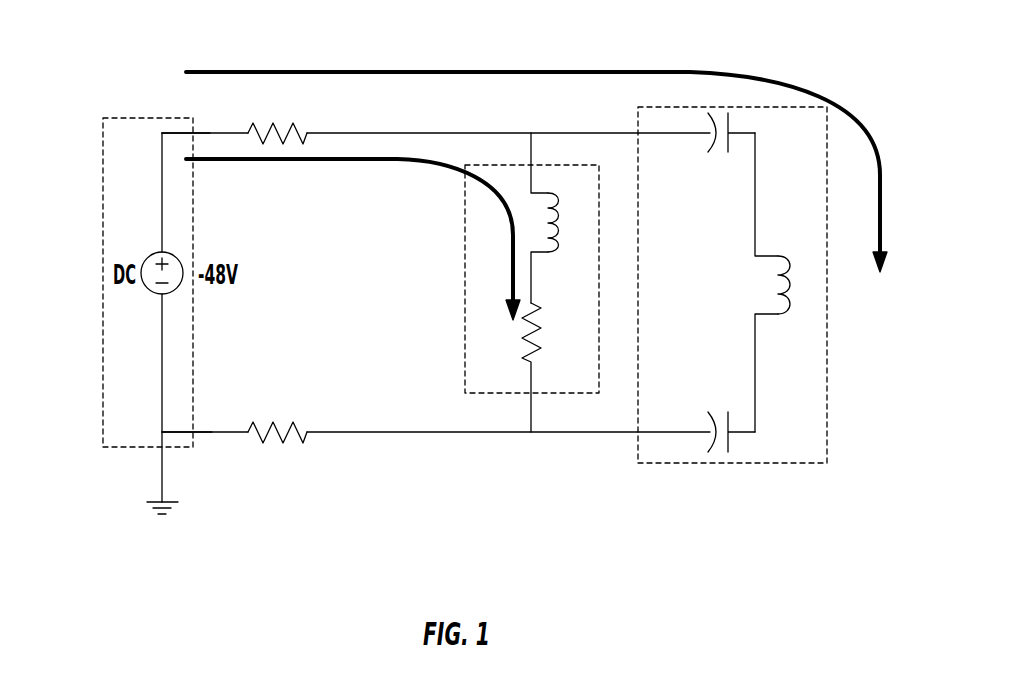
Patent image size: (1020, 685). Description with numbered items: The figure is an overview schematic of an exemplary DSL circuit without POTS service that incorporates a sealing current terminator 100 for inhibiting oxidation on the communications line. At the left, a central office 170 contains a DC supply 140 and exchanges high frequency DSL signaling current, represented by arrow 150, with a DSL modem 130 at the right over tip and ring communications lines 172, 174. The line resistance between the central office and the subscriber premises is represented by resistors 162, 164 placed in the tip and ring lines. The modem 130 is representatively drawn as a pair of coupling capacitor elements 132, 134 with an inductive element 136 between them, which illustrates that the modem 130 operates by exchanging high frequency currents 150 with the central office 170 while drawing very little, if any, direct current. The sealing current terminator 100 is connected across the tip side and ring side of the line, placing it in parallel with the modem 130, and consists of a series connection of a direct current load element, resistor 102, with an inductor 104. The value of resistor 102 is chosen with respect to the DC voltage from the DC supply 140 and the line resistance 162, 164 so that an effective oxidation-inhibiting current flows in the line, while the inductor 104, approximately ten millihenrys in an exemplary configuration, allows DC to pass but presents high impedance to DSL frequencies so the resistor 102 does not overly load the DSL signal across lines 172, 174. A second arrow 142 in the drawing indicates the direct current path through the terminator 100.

The sealing current terminator 100 is at (465, 355).
The resistor 102 is at (523, 337).
The inductor 104 is at (560, 250).
The DSL modem 130 is at (782, 463).
The coupling capacitor element 132 is at (728, 152).
The coupling capacitor element 134 is at (735, 444).
The inductive element 136 is at (785, 282).
The DC supply 140 is at (152, 295).
The current path arrow 142 is at (230, 160).
The high frequency DSL signaling current 150 is at (263, 72).
The resistor 162 is at (270, 127).
The resistor 164 is at (257, 443).
The central office 170 is at (102, 400).
The tip communications line 172 is at (208, 133).
The ring communications line 174 is at (210, 436).